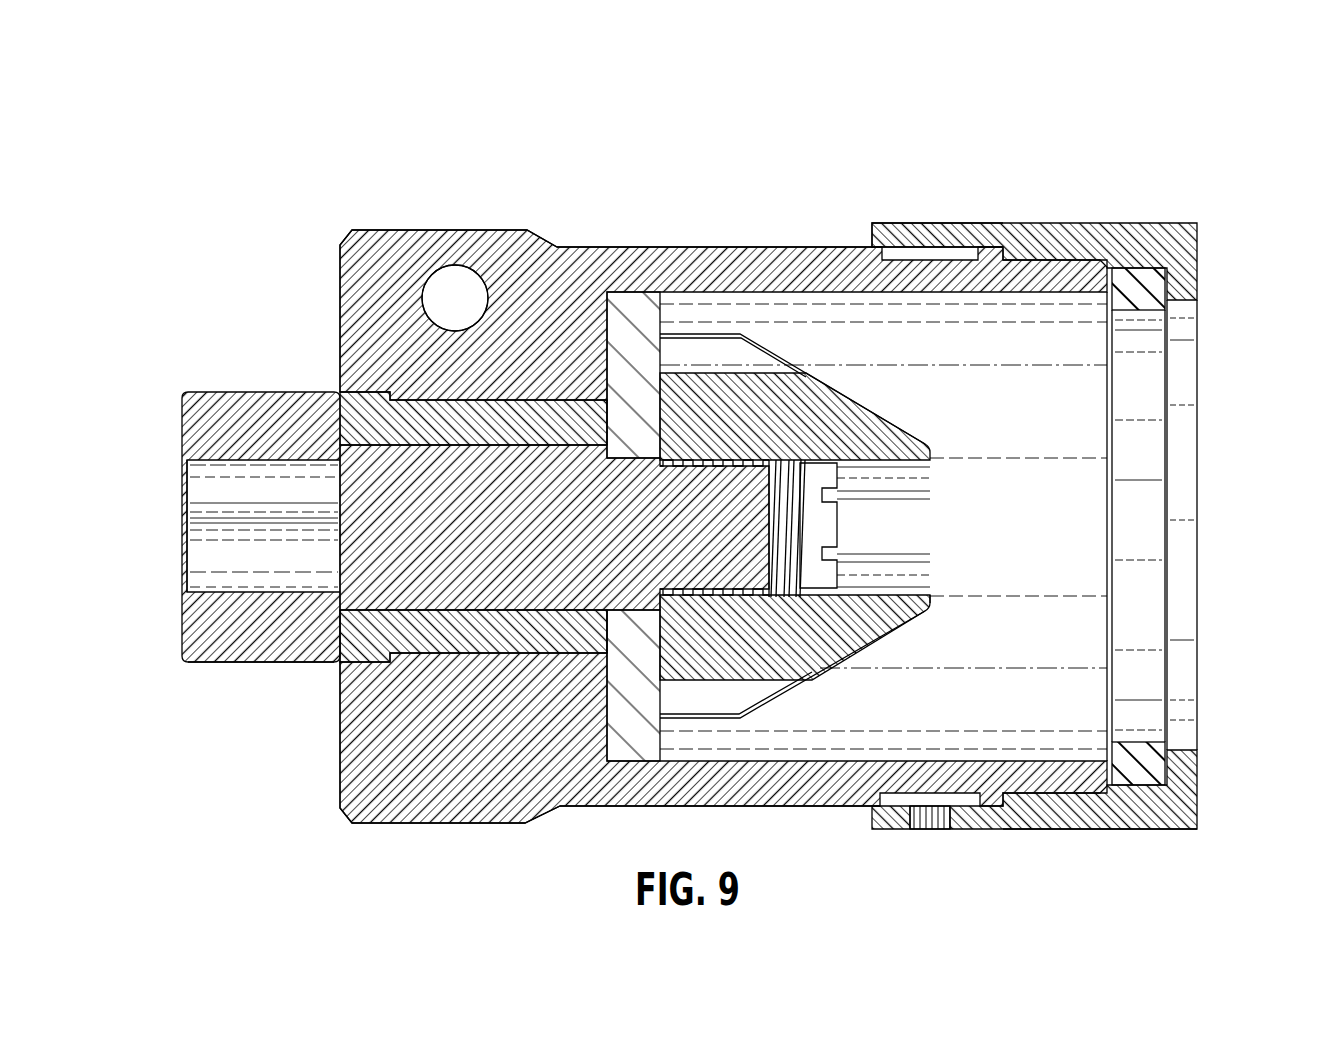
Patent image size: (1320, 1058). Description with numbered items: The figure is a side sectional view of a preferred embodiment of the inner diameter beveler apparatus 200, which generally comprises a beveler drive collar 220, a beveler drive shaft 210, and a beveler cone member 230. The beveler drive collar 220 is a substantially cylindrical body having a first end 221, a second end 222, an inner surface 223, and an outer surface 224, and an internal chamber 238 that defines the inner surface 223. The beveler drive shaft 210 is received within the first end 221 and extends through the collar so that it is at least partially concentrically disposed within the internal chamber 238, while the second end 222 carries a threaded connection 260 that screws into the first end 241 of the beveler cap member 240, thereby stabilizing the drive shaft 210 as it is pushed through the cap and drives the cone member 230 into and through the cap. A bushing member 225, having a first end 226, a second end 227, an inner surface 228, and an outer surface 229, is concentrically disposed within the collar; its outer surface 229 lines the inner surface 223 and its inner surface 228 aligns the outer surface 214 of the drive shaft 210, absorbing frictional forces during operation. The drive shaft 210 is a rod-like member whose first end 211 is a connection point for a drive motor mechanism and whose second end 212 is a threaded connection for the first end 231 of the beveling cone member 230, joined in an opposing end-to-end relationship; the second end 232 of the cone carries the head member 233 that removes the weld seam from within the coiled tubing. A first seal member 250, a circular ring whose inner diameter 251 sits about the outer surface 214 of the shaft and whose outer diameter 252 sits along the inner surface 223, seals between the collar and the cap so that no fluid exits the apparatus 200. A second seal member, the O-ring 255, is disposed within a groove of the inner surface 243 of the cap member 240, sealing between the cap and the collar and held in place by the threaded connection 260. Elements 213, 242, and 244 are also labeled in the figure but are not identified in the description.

The inner diameter beveler apparatus 200 is at (1086, 120).
The beveler drive shaft 210 is at (596, 473).
The first end of beveler drive shaft 211 is at (221, 570).
The second end of beveler drive shaft 212 is at (768, 527).
The bore 213 is at (205, 470).
The outer surface of beveler drive shaft 214 is at (226, 664).
The beveler drive collar 220 is at (666, 268).
The first end of beveler drive collar 221 is at (340, 300).
The second end of beveler drive collar 222 is at (1118, 270).
The inner surface of beveler drive collar 223 is at (790, 748).
The outer surface of beveler drive collar 224 is at (788, 246).
The bushing member 225 is at (354, 640).
The first end of bushing member 226 is at (338, 420).
The second end of bushing member 227 is at (605, 640).
The inner surface of bushing member 228 is at (416, 600).
The outer surface of bushing member 229 is at (505, 655).
The beveler cone member 230 is at (860, 520).
The first end of beveling cone member 231 is at (660, 668).
The second end of beveling cone member 232 is at (934, 606).
The head member 233 is at (862, 400).
The internal chamber 238 is at (1060, 706).
The beveler cap member 240 is at (1073, 532).
The first end of beveler cap member 241 is at (872, 245).
The cap end wall 242 is at (1198, 262).
The inner surface of beveler cap member 243 is at (1023, 775).
The cap bottom wall 244 is at (1100, 831).
The first seal member 250 is at (616, 716).
The inner diameter of first seal member 251 is at (620, 455).
The outer diameter of first seal member 252 is at (637, 290).
The O-ring 255 is at (1167, 770).
The threaded connection 260 is at (765, 458).